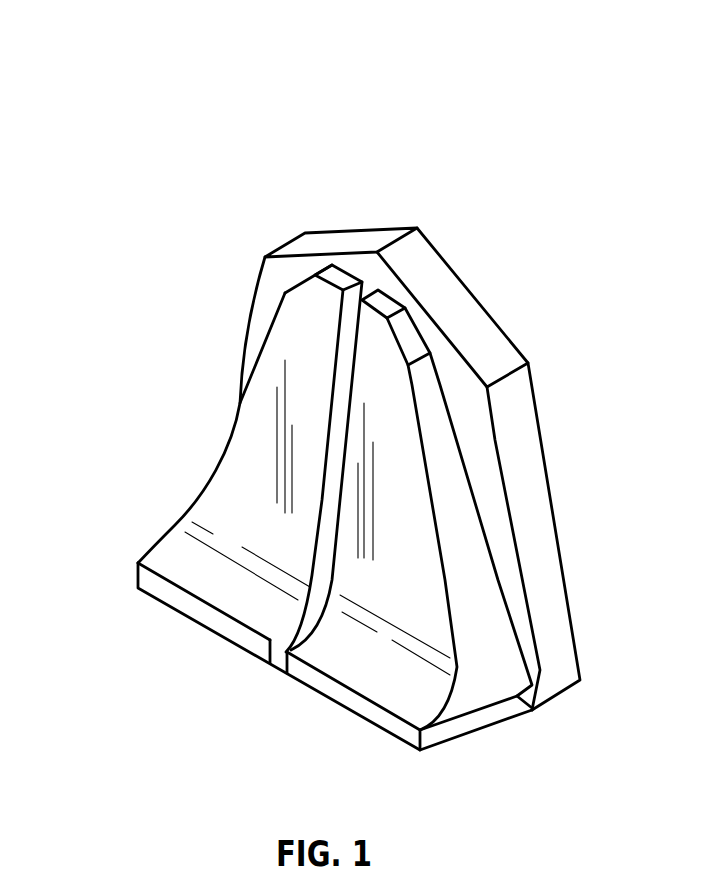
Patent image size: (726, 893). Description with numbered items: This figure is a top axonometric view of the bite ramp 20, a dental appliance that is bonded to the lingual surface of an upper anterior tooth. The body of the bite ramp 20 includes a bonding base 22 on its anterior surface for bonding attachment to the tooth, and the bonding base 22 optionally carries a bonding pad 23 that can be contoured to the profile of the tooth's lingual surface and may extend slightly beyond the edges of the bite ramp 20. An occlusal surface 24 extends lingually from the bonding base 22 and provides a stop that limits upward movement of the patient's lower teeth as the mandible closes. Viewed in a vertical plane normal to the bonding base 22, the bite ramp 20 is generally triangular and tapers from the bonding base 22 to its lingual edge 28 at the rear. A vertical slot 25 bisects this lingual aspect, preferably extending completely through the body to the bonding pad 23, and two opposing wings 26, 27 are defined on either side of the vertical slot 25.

The bite ramp 20 is at (250, 205).
The bonding base 22 is at (497, 321).
The bonding pad 23 is at (455, 275).
The occlusal surface 24 is at (468, 733).
The vertical slot 25 is at (340, 418).
The wing 26 is at (252, 510).
The wing 27 is at (424, 592).
The lingual edge 28 is at (257, 645).